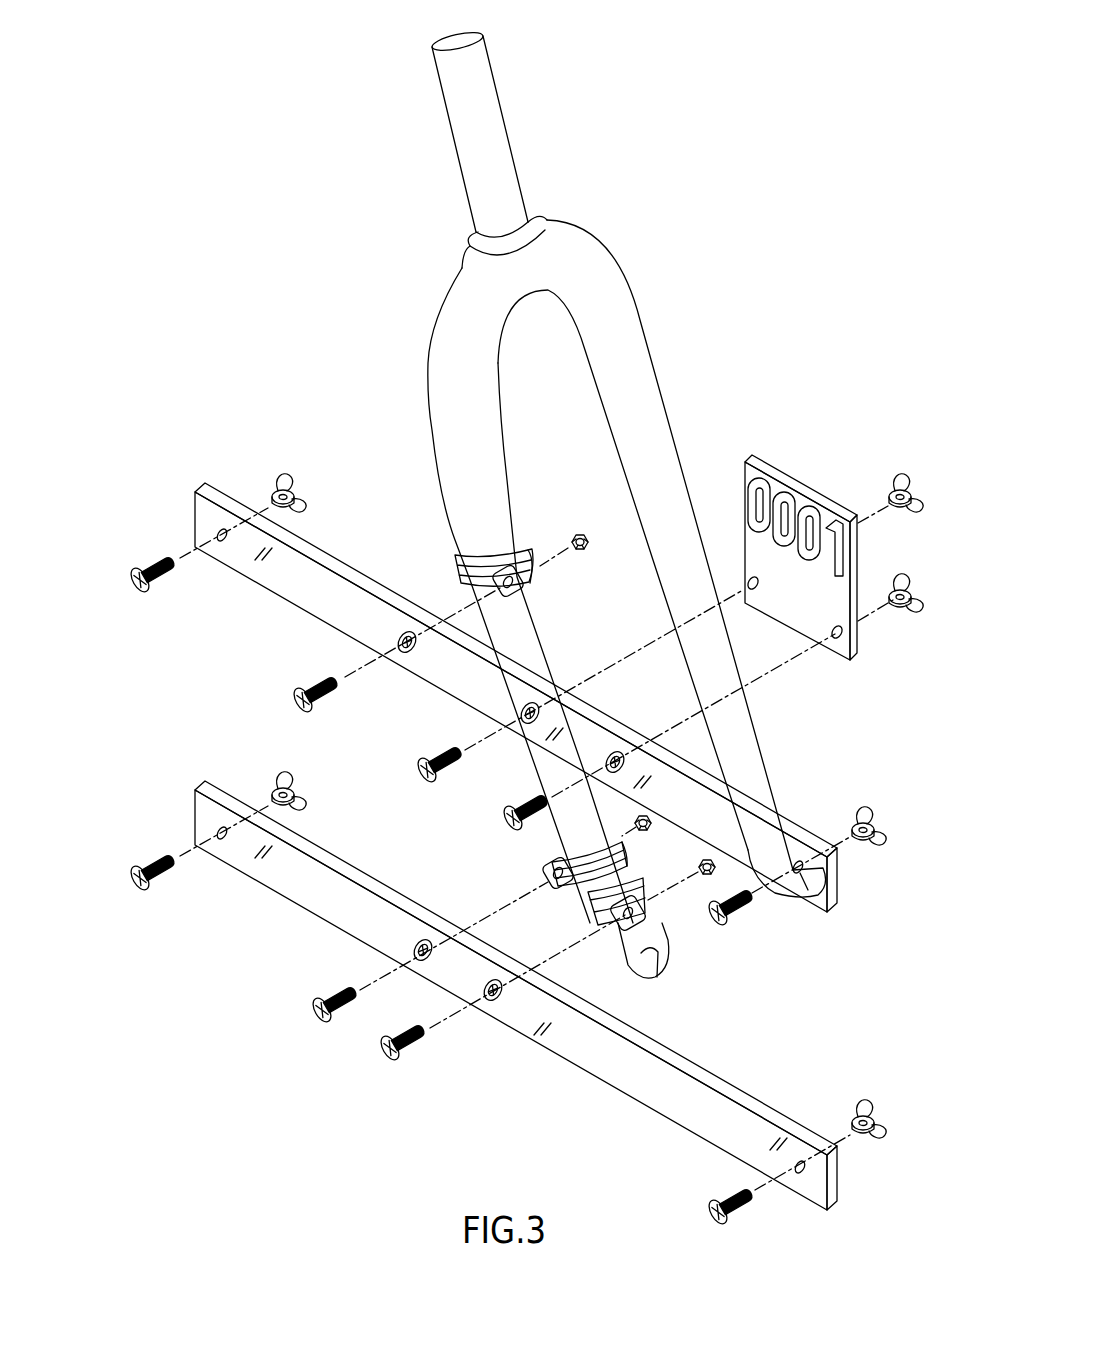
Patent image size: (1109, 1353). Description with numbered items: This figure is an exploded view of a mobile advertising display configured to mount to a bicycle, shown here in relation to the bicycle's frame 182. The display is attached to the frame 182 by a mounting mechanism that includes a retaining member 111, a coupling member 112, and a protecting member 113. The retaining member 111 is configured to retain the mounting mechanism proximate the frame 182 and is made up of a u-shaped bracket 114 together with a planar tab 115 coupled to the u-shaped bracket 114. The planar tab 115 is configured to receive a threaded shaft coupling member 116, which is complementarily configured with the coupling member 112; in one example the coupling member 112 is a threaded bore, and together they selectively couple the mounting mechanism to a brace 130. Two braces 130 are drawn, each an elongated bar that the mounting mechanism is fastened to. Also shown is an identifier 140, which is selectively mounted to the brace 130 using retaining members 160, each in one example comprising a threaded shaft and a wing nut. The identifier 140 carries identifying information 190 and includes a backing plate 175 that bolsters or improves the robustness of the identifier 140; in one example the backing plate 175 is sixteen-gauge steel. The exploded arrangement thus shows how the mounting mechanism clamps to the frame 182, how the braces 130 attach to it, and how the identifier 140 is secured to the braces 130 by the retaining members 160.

The frame 182 is at (585, 252).
The brace 130 is at (290, 585).
The identifier 140 is at (750, 470).
The identifying information 190 is at (840, 540).
The backing plate 175 is at (840, 640).
The retaining members 160 is at (142, 560).
The threaded shaft coupling member 116 is at (305, 680).
The retaining member 111 is at (550, 741).
The coupling member 112 is at (592, 543).
The protecting member 113 is at (528, 550).
The u-shaped bracket 114 is at (462, 574).
The planar tab 115 is at (512, 592).